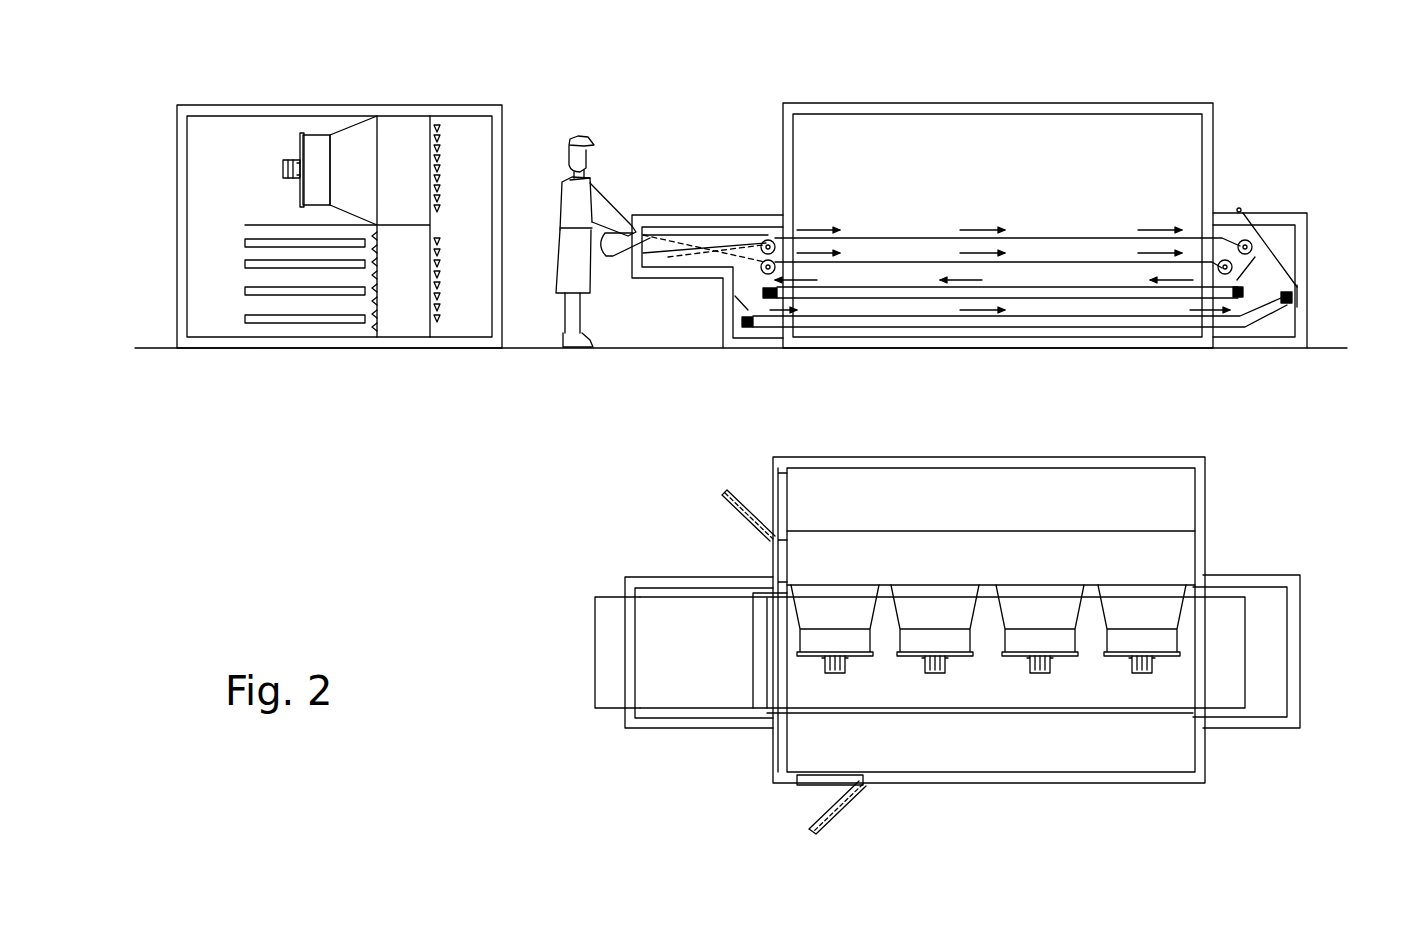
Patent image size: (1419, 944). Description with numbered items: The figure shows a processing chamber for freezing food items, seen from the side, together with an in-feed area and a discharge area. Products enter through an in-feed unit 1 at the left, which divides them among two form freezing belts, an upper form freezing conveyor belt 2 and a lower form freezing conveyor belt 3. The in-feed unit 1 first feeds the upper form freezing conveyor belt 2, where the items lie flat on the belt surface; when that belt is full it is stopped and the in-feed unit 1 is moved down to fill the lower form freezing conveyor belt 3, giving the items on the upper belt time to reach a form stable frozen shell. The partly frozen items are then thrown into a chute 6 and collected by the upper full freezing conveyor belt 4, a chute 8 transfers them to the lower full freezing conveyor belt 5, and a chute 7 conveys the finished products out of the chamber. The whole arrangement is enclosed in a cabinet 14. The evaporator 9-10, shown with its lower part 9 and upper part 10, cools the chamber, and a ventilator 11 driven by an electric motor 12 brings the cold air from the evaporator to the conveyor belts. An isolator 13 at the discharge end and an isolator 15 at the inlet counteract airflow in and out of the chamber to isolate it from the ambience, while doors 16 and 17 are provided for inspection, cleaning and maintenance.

The in-feed unit 1 is at (685, 232).
The upper form freezing conveyor belt 2 is at (860, 238).
The lower form freezing conveyor belt 3 is at (945, 262).
The upper full freezing conveyor belt 4 is at (1015, 287).
The lower full freezing conveyor belt 5 is at (1075, 315).
The chute 6 is at (1275, 248).
The chute 7 is at (1307, 305).
The chute 8 is at (737, 303).
The lower part of the evaporator 9 is at (405, 285).
The upper part of the evaporator 10 is at (403, 132).
The ventilator 11 is at (367, 180).
The electric motor 12 is at (288, 160).
The isolator 13 is at (1282, 348).
The cabinet 14 is at (1178, 107).
The isolator 15 is at (692, 725).
The door 16 is at (727, 500).
The door 17 is at (848, 803).
The evaporator 9-10 is at (823, 562).